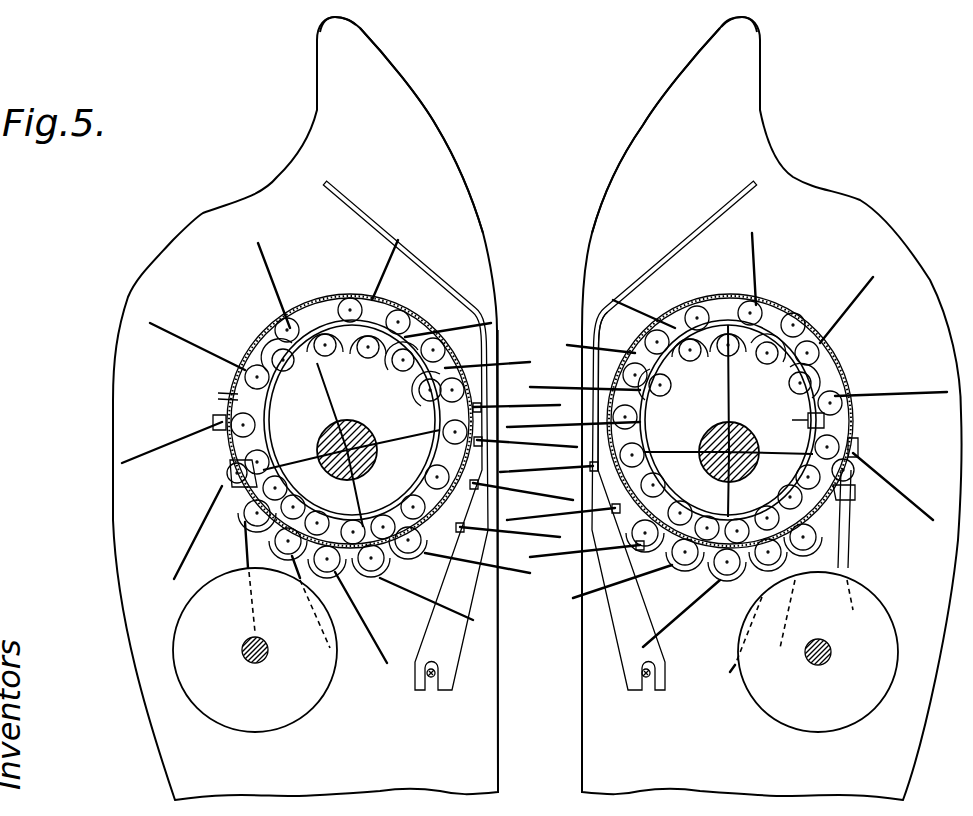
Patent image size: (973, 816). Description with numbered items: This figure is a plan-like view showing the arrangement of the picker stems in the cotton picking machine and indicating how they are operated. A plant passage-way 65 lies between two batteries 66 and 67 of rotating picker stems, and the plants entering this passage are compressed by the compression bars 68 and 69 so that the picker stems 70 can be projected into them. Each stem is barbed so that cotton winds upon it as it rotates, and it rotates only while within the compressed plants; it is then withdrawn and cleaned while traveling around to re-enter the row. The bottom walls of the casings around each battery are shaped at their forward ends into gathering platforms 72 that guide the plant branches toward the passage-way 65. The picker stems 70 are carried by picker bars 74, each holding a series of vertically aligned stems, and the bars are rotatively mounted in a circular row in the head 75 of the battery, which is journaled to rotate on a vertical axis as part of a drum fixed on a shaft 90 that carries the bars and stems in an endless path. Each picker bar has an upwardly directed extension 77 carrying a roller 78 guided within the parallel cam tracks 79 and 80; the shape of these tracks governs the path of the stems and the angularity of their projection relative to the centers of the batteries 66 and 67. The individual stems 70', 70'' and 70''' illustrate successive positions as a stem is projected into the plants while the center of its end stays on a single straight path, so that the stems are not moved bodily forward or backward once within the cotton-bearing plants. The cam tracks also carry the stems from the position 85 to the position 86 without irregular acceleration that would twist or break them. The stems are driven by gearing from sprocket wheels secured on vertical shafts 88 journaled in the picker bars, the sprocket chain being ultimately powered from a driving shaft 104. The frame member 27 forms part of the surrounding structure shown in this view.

The side plate 27 is at (316, 77).
The head 75 is at (336, 22).
The gathering platform 72 is at (437, 127).
The compression bar 69 is at (412, 248).
The compression bar 68 is at (668, 247).
The picker stem position 86 is at (620, 298).
The plant passage-way 65 is at (540, 535).
The cam track 79 is at (343, 294).
The battery of rotating picker stems 66 is at (351, 423).
The battery of rotating picker stems 67 is at (728, 420).
The shaft 90 is at (357, 428).
The cam track 80 is at (312, 325).
The roller 78 is at (283, 333).
The upwardly directed extension 77 is at (218, 396).
The picker bar 74 is at (227, 497).
The shaft 88 is at (388, 580).
The picker stem position 85 is at (823, 553).
The picker stem 70 is at (534, 451).
The picker stem 70' is at (448, 314).
The picker stem 70'' is at (499, 345).
The picker stem 70''' is at (527, 382).
The driving shaft 104 is at (266, 657).